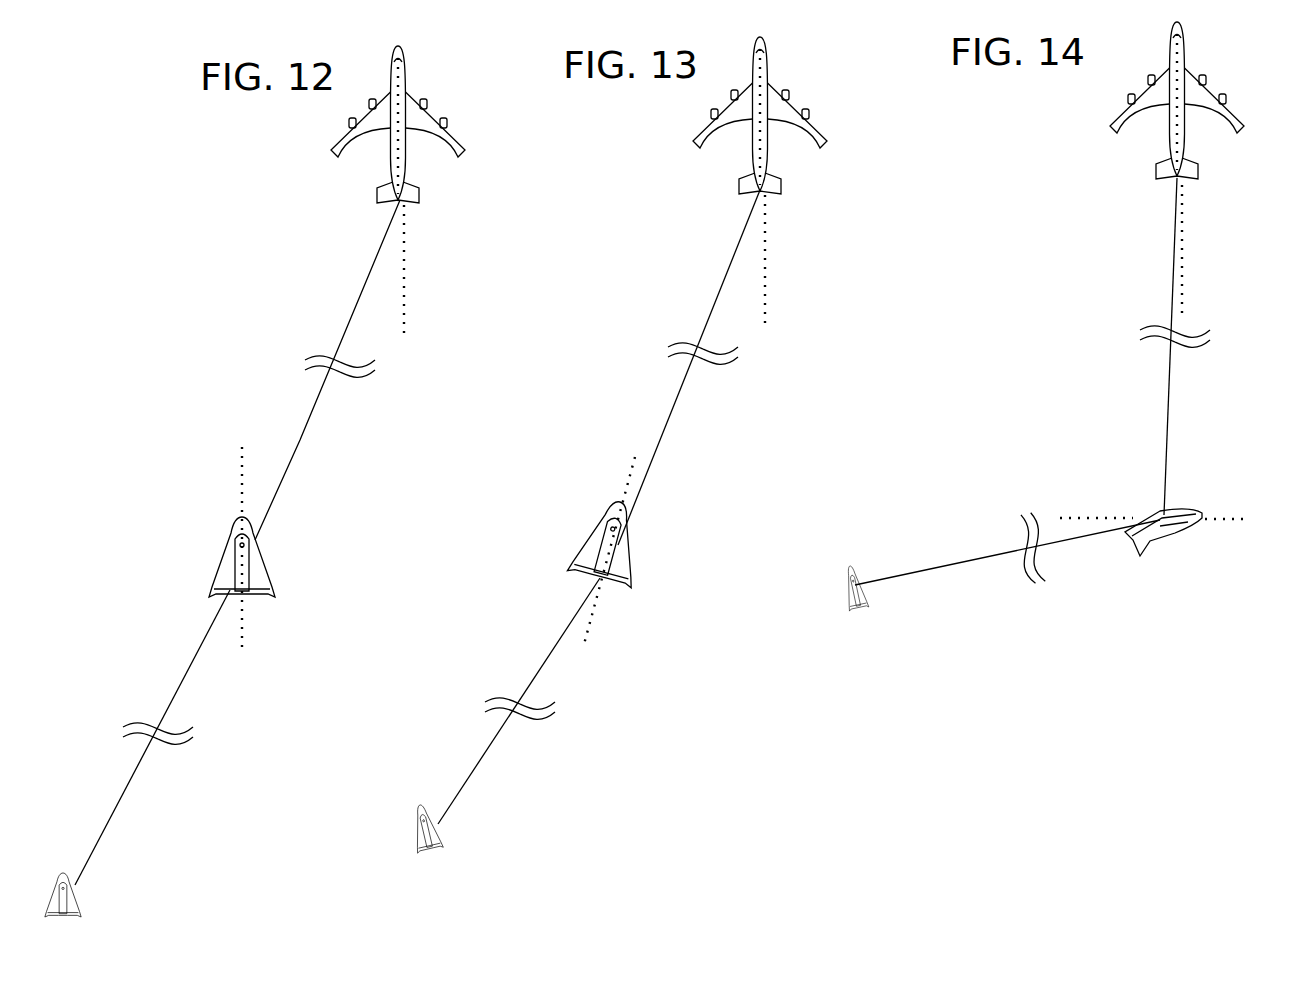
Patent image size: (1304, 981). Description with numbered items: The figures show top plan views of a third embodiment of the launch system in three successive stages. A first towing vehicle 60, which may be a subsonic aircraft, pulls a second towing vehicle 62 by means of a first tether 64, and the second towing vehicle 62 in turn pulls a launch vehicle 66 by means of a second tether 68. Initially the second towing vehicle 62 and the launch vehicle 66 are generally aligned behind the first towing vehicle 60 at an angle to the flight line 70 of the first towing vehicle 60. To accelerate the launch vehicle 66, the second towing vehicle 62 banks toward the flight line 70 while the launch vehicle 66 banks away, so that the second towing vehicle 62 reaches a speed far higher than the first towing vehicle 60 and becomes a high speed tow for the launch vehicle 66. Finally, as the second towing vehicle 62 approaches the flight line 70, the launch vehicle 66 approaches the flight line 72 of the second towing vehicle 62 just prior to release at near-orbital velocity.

In FIG. 12, the first towing vehicle 60 is at (412, 78).
In FIG. 13, the first towing vehicle 60 is at (770, 64).
In FIG. 14, the first towing vehicle 60 is at (1163, 127).
In FIG. 12, the second towing vehicle 62 is at (274, 572).
In FIG. 13, the second towing vehicle 62 is at (630, 550).
In FIG. 14, the second towing vehicle 62 is at (1163, 540).
In FIG. 12, the first tether 64 is at (320, 412).
In FIG. 13, the first tether 64 is at (642, 503).
In FIG. 14, the first tether 64 is at (1161, 436).
In FIG. 12, the launch vehicle 66 is at (86, 903).
In FIG. 13, the launch vehicle 66 is at (452, 840).
In FIG. 14, the launch vehicle 66 is at (865, 596).
In FIG. 12, the second tether 68 is at (127, 797).
In FIG. 13, the second tether 68 is at (487, 760).
In FIG. 14, the second tether 68 is at (944, 569).
In FIG. 12, the flight line of first towing vehicle 70 is at (410, 237).
In FIG. 13, the flight line of first towing vehicle 70 is at (770, 250).
In FIG. 14, the flight line of first towing vehicle 70 is at (1187, 275).
In FIG. 12, the flight line of second towing vehicle 72 is at (252, 638).
In FIG. 13, the flight line of second towing vehicle 72 is at (594, 640).
In FIG. 14, the flight line of second towing vehicle 72 is at (1220, 524).